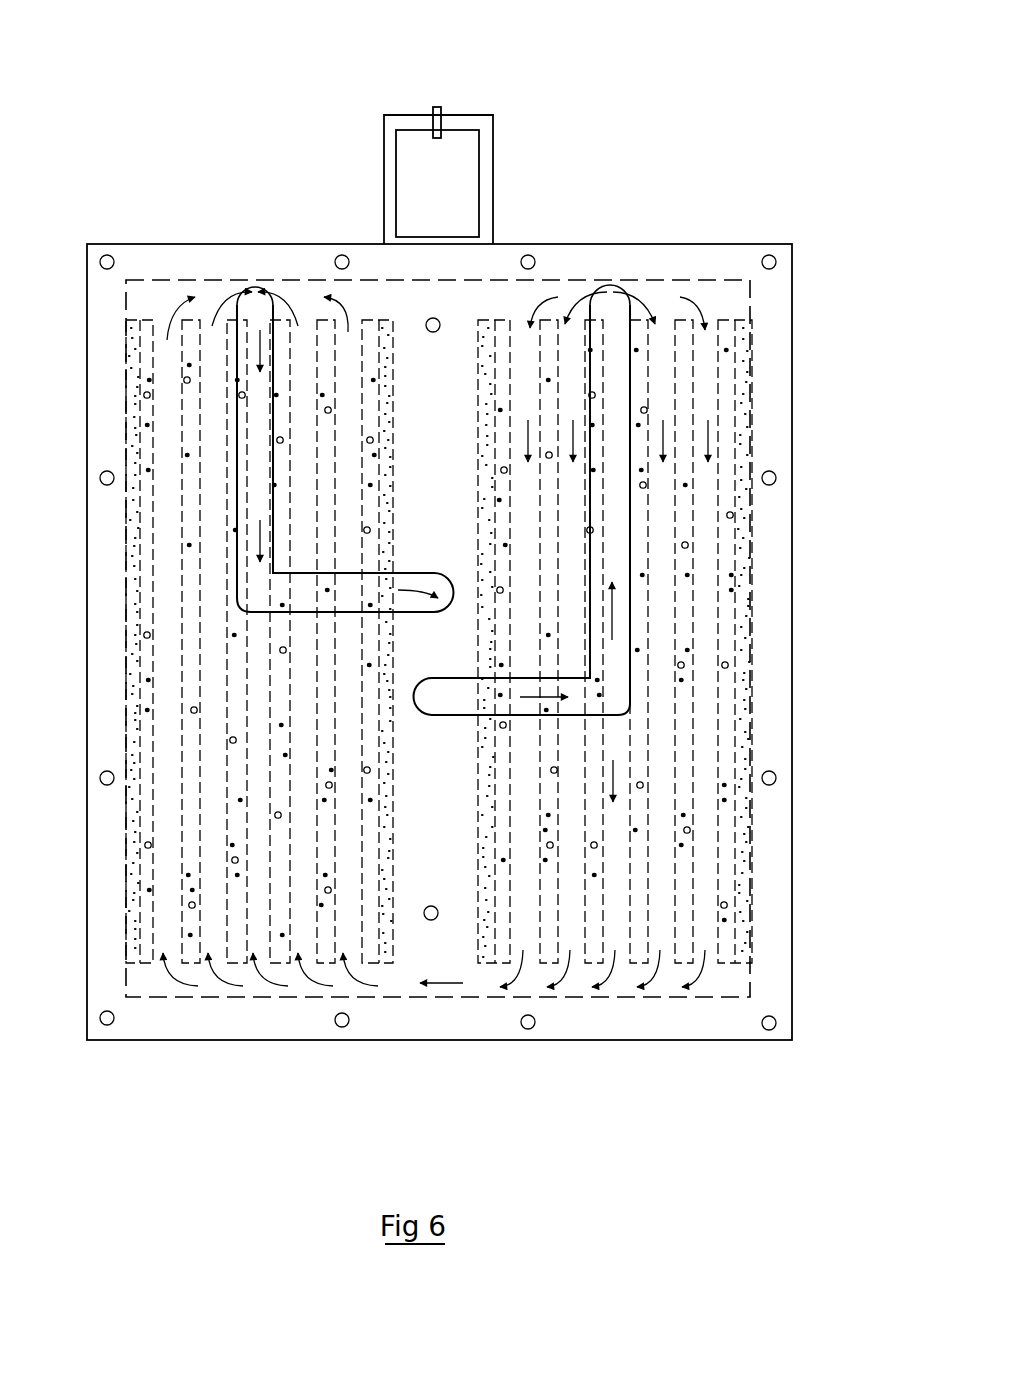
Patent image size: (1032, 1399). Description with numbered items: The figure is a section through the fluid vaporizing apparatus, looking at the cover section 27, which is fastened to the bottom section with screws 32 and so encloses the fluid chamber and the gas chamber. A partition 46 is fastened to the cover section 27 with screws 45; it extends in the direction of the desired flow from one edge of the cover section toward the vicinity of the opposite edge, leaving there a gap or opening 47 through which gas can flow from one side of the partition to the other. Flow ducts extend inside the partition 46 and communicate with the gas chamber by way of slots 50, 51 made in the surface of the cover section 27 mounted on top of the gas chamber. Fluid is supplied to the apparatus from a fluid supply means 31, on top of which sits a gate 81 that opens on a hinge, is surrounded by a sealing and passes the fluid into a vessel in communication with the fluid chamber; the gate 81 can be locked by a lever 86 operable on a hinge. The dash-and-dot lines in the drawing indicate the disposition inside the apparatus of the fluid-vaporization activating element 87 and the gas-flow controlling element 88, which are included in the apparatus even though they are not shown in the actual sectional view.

The cover section 27 is at (608, 1040).
The fluid supply means 31 is at (470, 114).
The screws 32 is at (108, 256).
The screws 45 is at (428, 333).
The partition 46 is at (415, 933).
The gap or opening 47 is at (462, 988).
The slot 50 is at (611, 300).
The slot 51 is at (254, 318).
The gate 81 is at (460, 184).
The lever 86 is at (437, 106).
The fluid-vaporization activating element 87 is at (237, 962).
The gas-flow controlling element 88 is at (133, 322).